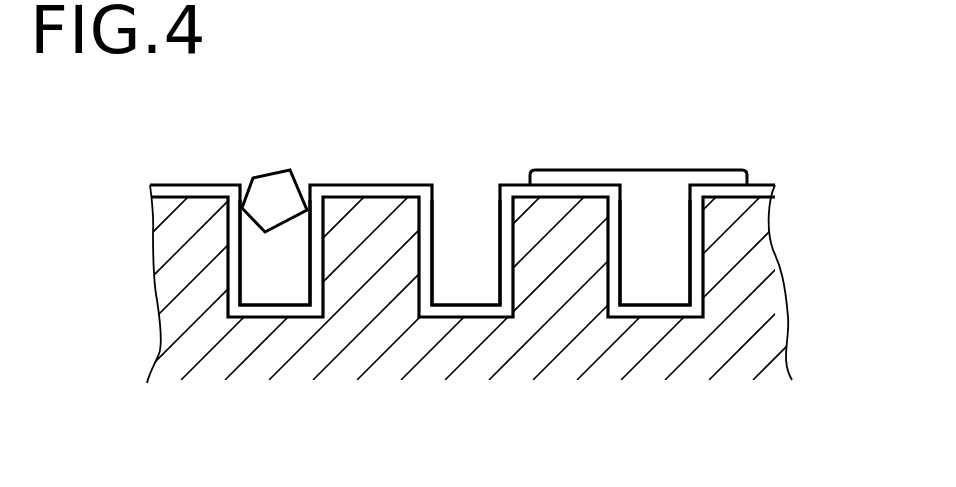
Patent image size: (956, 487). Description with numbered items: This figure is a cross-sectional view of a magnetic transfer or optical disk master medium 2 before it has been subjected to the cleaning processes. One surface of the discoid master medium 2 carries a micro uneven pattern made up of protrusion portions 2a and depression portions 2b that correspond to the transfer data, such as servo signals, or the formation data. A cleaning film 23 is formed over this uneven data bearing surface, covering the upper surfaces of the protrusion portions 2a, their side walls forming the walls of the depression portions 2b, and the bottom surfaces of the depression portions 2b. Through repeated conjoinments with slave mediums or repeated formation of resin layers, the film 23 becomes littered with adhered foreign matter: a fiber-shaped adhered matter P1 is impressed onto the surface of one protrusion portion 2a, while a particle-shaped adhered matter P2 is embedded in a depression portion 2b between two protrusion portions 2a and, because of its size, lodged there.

The master medium 2 is at (773, 302).
The protrusion portions 2a is at (358, 220).
The depression portions 2b is at (268, 276).
The cleaning film 23 is at (180, 188).
The fiber-shaped adhered matter P1 is at (655, 177).
The particle-shaped adhered matter P2 is at (272, 175).